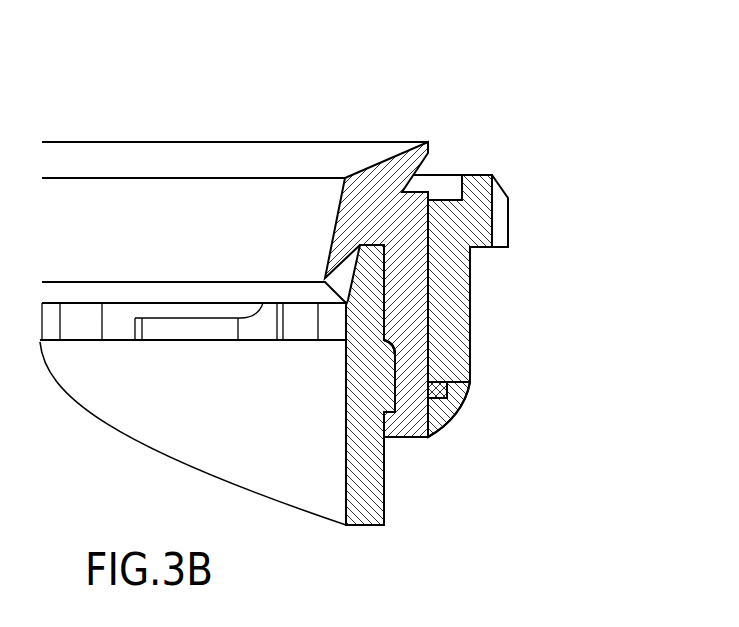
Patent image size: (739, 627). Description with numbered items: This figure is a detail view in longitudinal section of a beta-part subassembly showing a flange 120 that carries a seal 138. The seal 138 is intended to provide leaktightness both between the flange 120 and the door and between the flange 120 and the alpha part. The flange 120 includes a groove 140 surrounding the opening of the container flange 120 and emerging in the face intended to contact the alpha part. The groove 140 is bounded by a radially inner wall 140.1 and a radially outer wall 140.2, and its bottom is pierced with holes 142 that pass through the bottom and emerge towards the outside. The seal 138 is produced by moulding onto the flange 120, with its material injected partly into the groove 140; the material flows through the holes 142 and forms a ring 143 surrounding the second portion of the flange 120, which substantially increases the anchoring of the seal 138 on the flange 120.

The flange 120 is at (538, 254).
The seal 138 is at (316, 142).
The groove 140 is at (400, 282).
The radially inner wall 140.1 is at (385, 355).
The radially outer wall 140.2 is at (428, 328).
The holes 142 is at (395, 397).
The ring 143 is at (438, 428).